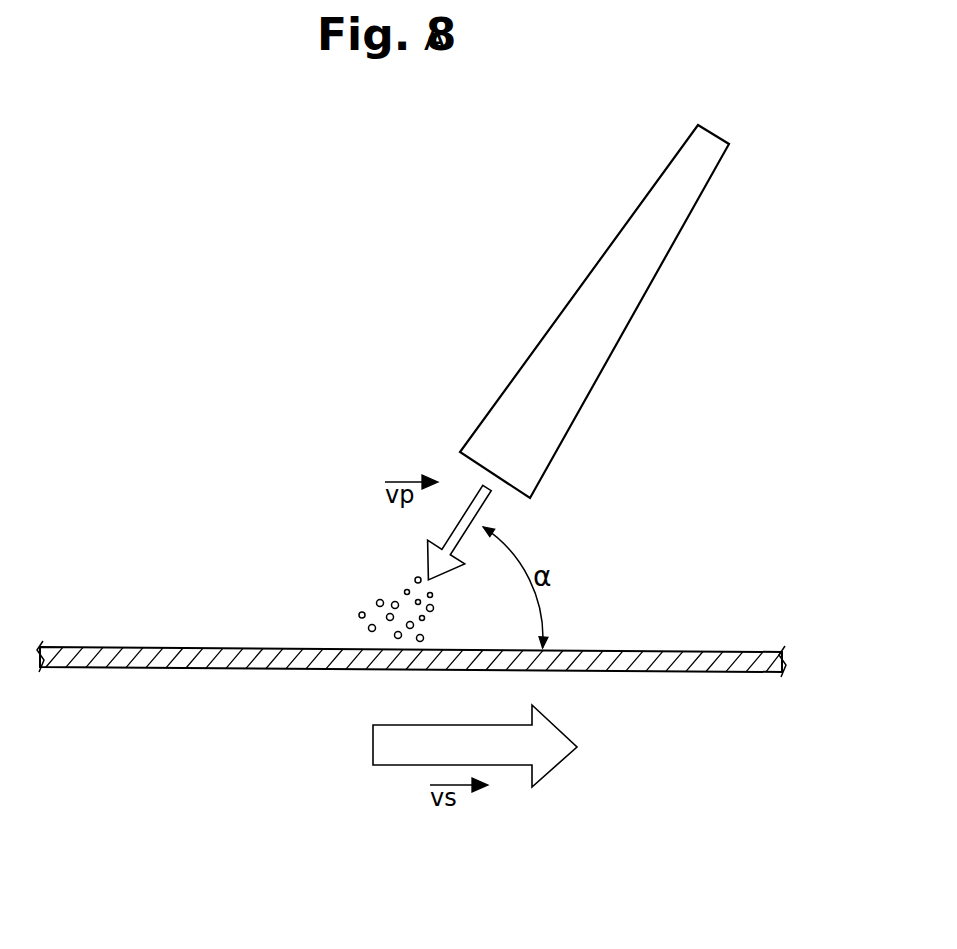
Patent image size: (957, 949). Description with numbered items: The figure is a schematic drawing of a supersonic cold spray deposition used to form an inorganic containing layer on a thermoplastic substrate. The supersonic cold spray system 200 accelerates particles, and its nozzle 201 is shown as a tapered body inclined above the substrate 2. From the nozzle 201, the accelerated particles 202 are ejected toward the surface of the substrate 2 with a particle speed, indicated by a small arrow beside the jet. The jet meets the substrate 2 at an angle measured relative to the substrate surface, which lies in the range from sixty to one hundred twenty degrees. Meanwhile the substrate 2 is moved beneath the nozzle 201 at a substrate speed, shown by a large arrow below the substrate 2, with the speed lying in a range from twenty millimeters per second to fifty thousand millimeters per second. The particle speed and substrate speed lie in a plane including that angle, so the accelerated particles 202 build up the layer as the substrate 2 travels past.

The supersonic cold spray system 200 is at (521, 335).
The nozzle 201 is at (594, 311).
The accelerated particles 202 is at (373, 593).
The substrate 2 is at (182, 668).